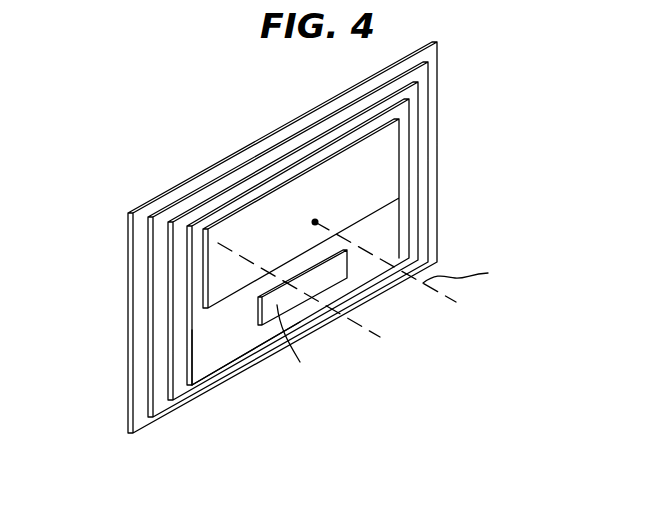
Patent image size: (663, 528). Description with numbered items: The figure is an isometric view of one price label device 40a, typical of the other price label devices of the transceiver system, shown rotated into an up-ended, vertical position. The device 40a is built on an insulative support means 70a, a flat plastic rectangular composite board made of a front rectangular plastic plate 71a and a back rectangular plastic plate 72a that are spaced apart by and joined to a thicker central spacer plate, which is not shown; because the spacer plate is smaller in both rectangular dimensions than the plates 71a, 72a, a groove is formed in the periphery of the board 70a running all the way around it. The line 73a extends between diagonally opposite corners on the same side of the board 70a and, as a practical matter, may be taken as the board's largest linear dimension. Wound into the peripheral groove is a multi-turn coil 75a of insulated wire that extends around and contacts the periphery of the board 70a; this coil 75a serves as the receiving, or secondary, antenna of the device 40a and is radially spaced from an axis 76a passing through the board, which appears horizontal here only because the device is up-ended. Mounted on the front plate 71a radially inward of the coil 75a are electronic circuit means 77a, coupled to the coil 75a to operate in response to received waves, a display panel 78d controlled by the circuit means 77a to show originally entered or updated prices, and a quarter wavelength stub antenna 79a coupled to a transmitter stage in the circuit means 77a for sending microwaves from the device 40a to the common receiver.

The price label device 40a is at (267, 118).
The insulative support means 70a is at (356, 229).
The front rectangular plastic plate 71a is at (200, 353).
The back rectangular plastic plate 72a is at (128, 323).
The line between diagonally opposite corners 73a is at (221, 240).
The multi-turn coil 75a is at (172, 220).
The axis 76a is at (368, 253).
The electronic circuit means 77a is at (322, 280).
The display panel 78d is at (385, 160).
The quarter wavelength stub antenna 79a is at (238, 356).